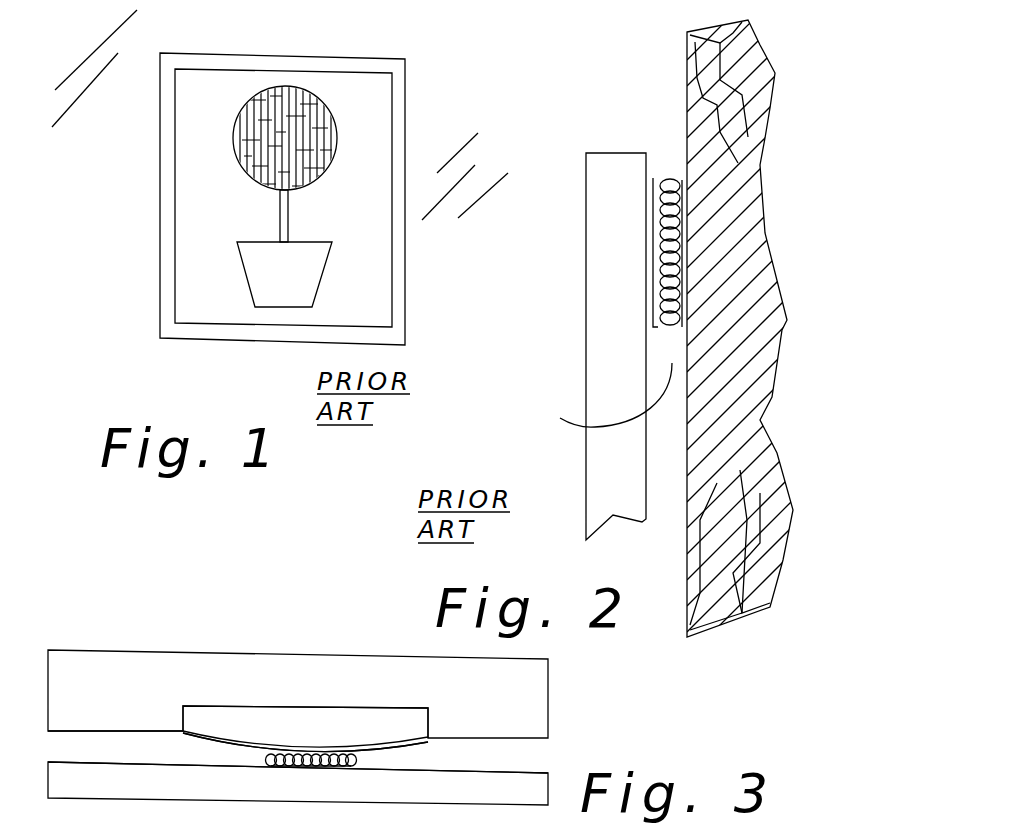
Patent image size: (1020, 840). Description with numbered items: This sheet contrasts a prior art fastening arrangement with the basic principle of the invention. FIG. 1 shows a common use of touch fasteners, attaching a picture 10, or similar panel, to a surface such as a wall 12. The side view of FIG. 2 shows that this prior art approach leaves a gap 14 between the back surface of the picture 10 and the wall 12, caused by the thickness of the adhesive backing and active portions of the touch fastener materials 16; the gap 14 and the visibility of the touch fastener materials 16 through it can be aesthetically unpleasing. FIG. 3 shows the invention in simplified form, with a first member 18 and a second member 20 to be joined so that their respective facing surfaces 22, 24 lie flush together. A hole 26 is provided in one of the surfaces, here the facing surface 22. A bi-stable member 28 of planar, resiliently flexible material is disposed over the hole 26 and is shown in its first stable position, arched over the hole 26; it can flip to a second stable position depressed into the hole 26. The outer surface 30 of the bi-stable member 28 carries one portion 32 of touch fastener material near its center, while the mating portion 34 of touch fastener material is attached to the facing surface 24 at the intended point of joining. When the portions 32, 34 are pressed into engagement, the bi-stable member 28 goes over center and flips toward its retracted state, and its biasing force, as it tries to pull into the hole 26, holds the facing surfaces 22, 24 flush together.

In FIG. 1, the picture 10 is at (407, 113).
In FIG. 2, the picture 10 is at (597, 167).
In FIG. 1, the wall 12 is at (130, 215).
In FIG. 2, the wall 12 is at (685, 72).
In FIG. 2, the gap 14 is at (597, 395).
In FIG. 2, the touch fastener materials 16 is at (667, 168).
In FIG. 3, the first member 18 is at (517, 709).
In FIG. 3, the second member 20 is at (528, 785).
In FIG. 3, the facing surface of first member 22 is at (77, 732).
In FIG. 3, the facing surface of second member 24 is at (482, 768).
In FIG. 3, the hole 26 is at (210, 715).
In FIG. 3, the bi-stable member 28 is at (240, 737).
In FIG. 3, the outer surface of bi-stable member 30 is at (257, 748).
In FIG. 3, the one portion of touch fastener material 32 is at (320, 748).
In FIG. 3, the mating portion of touch fastener material 34 is at (350, 767).